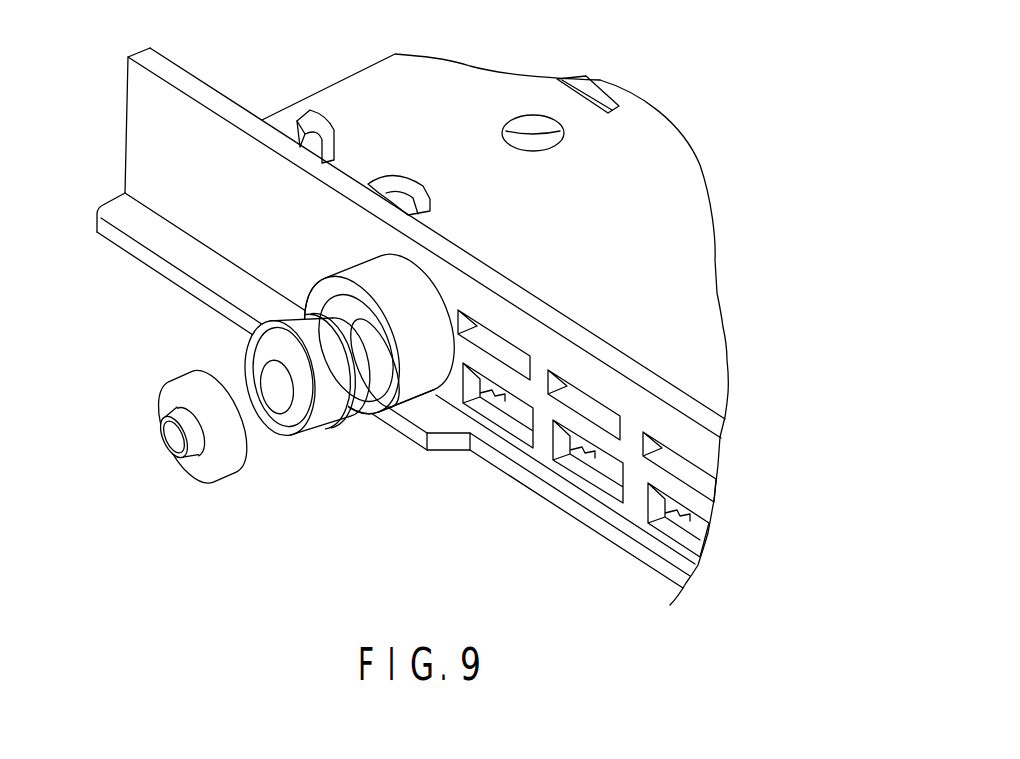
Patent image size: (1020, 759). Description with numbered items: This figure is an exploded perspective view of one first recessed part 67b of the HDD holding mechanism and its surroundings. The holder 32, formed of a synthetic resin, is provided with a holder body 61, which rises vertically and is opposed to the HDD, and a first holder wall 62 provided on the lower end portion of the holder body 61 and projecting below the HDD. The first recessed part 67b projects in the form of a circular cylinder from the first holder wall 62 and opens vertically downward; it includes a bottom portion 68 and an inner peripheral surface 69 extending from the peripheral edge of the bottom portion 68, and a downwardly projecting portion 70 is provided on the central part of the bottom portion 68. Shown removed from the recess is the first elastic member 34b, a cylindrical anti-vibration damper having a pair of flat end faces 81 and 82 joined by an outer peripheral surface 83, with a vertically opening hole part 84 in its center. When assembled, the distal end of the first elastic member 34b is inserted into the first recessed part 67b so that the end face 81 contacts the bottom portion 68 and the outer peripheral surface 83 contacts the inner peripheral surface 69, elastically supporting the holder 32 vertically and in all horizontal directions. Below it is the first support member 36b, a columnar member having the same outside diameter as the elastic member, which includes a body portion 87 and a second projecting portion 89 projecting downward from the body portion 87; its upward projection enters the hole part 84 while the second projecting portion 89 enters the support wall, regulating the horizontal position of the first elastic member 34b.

The holder 32 is at (412, 306).
The holder body 61 is at (386, 98).
The first holder wall 62 is at (530, 333).
The first recessed part 67b is at (370, 354).
The downwardly projecting portion 70 is at (373, 343).
The inner peripheral surface 69 is at (283, 338).
The end face 81 is at (368, 392).
The bottom portion 68 is at (394, 410).
The first elastic member 34b is at (275, 380).
The end face 82 is at (288, 427).
The outer peripheral surface 83 is at (265, 325).
The hole part 84 is at (274, 388).
The first support member 36b is at (173, 450).
The body portion 87 is at (198, 376).
The second projecting portion 89 is at (168, 441).